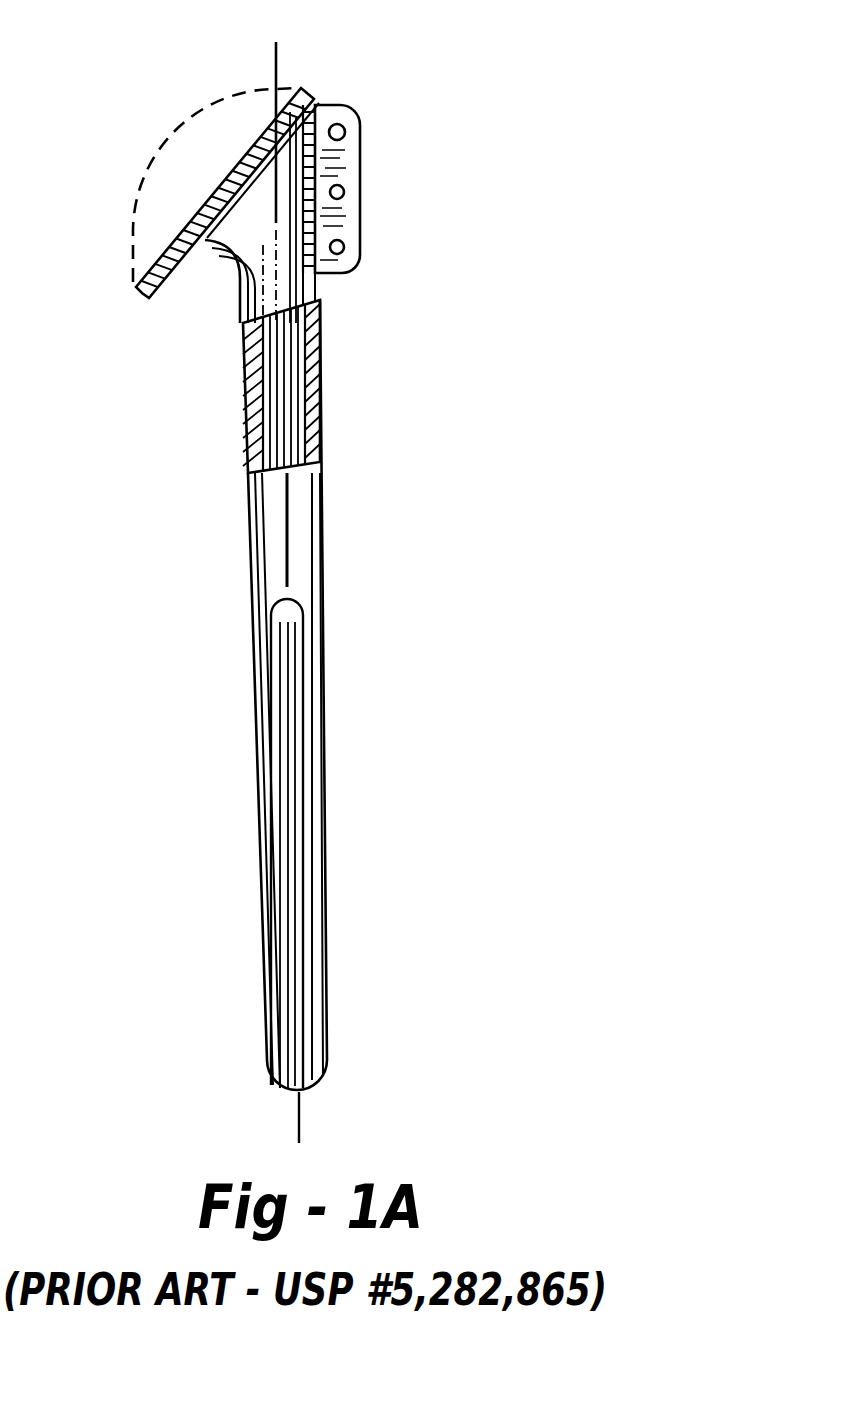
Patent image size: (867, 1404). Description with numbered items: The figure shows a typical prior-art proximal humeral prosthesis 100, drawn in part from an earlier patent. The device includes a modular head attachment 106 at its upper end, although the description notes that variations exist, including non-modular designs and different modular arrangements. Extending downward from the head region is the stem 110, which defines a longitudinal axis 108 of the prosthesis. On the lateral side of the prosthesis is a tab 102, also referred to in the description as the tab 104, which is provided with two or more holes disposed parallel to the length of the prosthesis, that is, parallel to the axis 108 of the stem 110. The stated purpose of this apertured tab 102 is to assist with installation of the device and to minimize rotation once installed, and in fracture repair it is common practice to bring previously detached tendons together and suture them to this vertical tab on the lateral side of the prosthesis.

The proximal humeral prosthesis 100 is at (372, 473).
The tab 102 is at (347, 147).
The tab 104 is at (345, 192).
The modular head attachment 106 is at (213, 100).
The axis 108 is at (276, 62).
The stem 110 is at (320, 360).